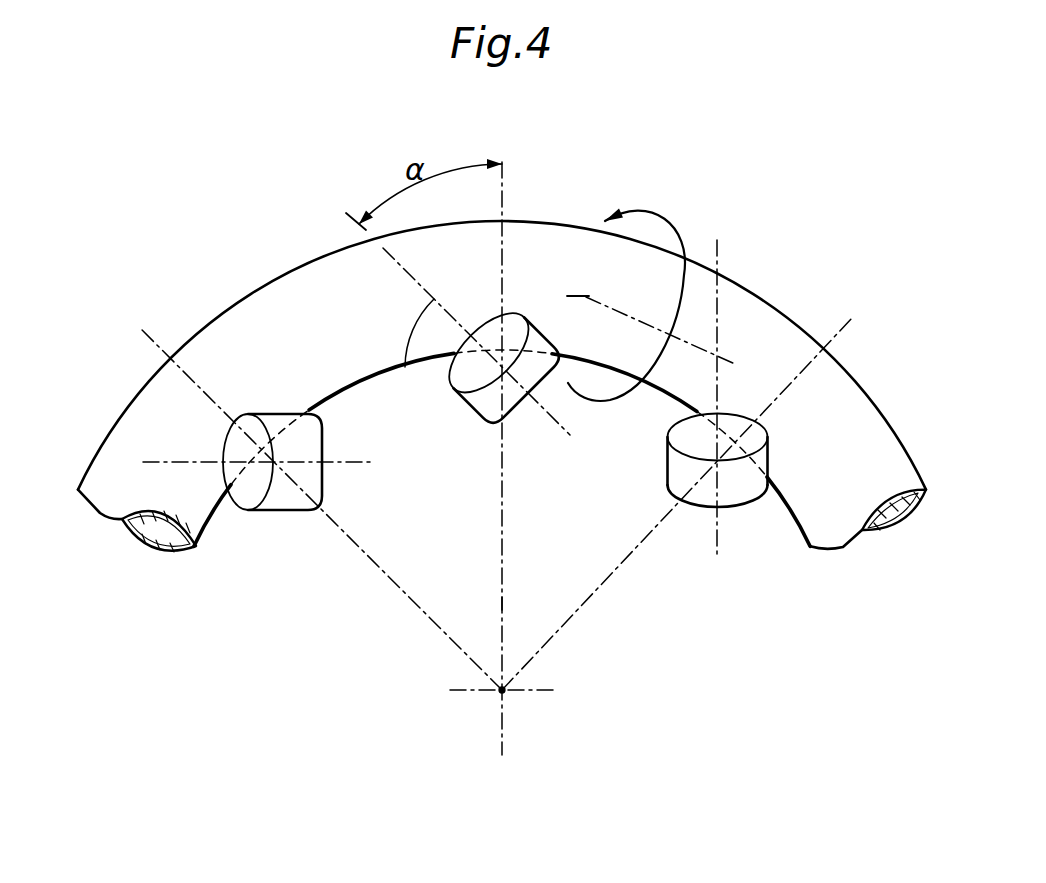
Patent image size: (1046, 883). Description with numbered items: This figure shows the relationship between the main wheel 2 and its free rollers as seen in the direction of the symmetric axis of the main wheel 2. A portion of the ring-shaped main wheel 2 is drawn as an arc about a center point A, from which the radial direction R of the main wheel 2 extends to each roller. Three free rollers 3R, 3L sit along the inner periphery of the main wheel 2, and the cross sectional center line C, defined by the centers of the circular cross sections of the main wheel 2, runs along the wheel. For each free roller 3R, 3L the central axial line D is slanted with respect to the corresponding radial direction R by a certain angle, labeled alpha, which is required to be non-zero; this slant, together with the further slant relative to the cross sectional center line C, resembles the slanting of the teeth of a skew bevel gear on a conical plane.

The main wheel 2 is at (858, 381).
The free roller 3R is at (518, 408).
The free roller 3L is at (270, 509).
The center of curvature A is at (501, 692).
The cross sectional center line C is at (579, 294).
The central axial line D is at (405, 367).
The radial direction R is at (502, 597).